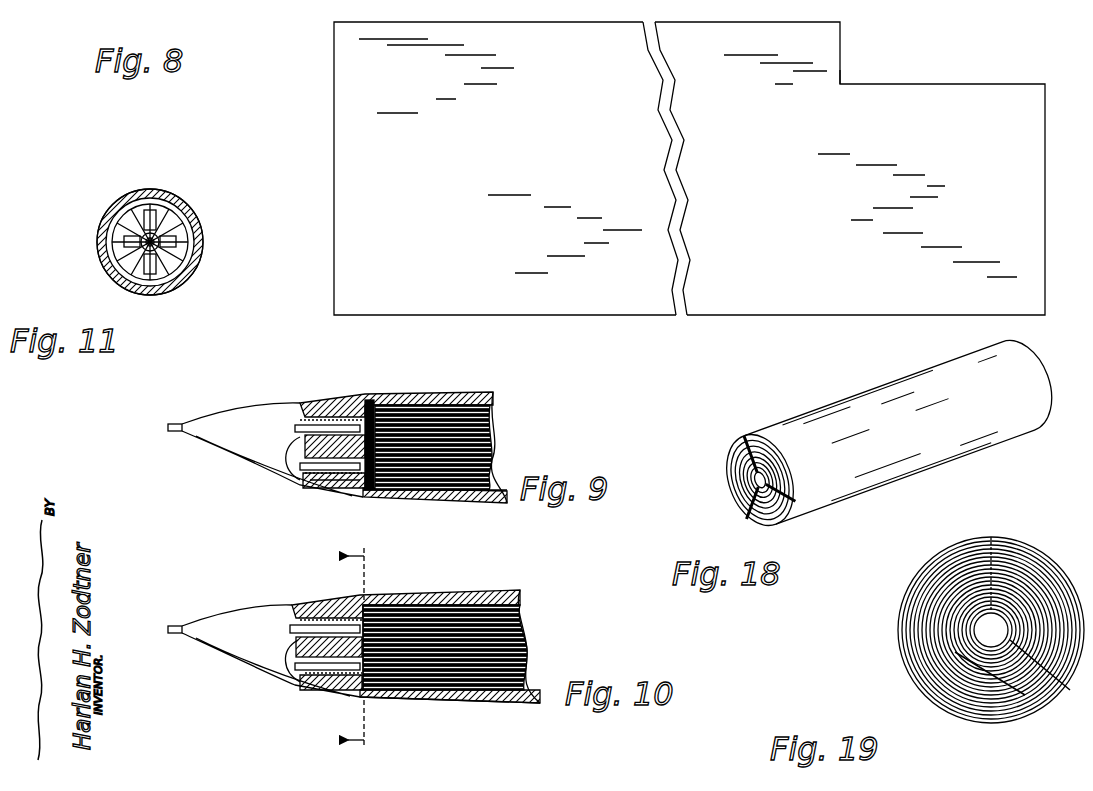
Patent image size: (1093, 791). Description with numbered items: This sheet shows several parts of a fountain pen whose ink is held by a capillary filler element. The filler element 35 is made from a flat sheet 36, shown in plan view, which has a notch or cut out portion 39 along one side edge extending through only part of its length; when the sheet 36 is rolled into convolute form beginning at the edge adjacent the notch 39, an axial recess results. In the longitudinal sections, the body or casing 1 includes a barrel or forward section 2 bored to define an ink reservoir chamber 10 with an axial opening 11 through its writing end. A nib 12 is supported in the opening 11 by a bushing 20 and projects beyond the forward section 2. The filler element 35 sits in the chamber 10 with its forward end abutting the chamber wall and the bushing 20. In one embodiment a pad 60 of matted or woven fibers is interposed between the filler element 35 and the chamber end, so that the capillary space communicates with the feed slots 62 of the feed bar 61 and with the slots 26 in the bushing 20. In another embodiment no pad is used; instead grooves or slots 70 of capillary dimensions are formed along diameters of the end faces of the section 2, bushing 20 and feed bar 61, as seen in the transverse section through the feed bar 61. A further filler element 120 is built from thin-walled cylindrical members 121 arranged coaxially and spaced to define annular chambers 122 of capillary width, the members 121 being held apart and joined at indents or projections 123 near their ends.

In FIG. 9, the body or casing 1 is at (442, 498).
In FIG. 10, the body or casing 1 is at (445, 700).
In FIG. 11, the barrel or forward section 2 is at (150, 190).
In FIG. 9, the barrel or forward section 2 is at (428, 395).
In FIG. 10, the barrel or forward section 2 is at (445, 598).
In FIG. 9, the ink reservoir chamber 10 is at (467, 492).
In FIG. 10, the axial opening 11 is at (371, 649).
In FIG. 9, the nib 12 is at (304, 412).
In FIG. 10, the nib 12 is at (316, 615).
In FIG. 11, the bushing 20 is at (112, 226).
In FIG. 9, the bushing 20 is at (338, 416).
In FIG. 10, the bushing 20 is at (340, 618).
In FIG. 11, the slots 26 is at (128, 210).
In FIG. 9, the slots 26 is at (362, 486).
In FIG. 9, the capillary filler element 35 is at (458, 410).
In FIG. 10, the capillary filler element 35 is at (476, 692).
In FIG. 8, the sheet 36 is at (334, 215).
In FIG. 8, the notch or cut out portion 39 is at (840, 62).
In FIG. 9, the pad 60 is at (372, 405).
In FIG. 11, the feed bar 61 is at (180, 208).
In FIG. 9, the feed bar 61 is at (285, 448).
In FIG. 10, the feed bar 61 is at (296, 650).
In FIG. 11, the feed slots 62 is at (118, 262).
In FIG. 9, the feed slots 62 is at (366, 430).
In FIG. 10, the feed slots 62 is at (330, 672).
In FIG. 11, the grooves or slots 70 is at (190, 212).
In FIG. 10, the grooves or slots 70 is at (366, 604).
In FIG. 18, the filler element 120 is at (855, 418).
In FIG. 18, the thin-walled cylindrical members 121 is at (736, 440).
In FIG. 19, the thin-walled cylindrical members 121 is at (918, 580).
In FIG. 19, the annular chambers 122 is at (900, 640).
In FIG. 19, the indents or projections 123 is at (999, 536).